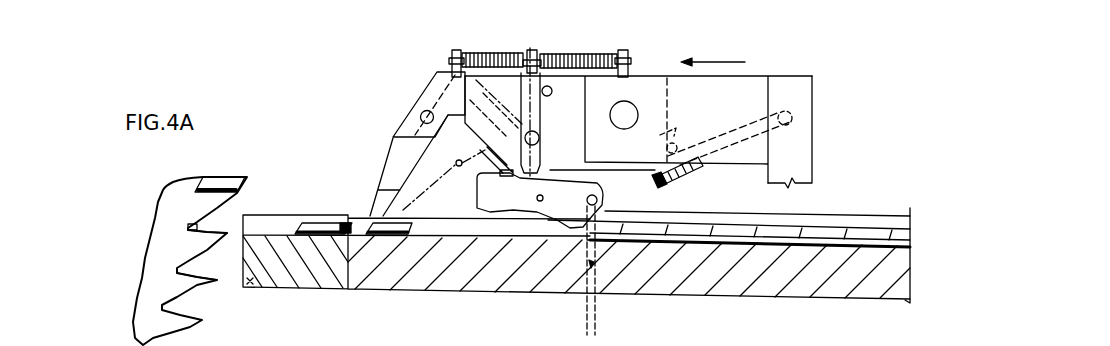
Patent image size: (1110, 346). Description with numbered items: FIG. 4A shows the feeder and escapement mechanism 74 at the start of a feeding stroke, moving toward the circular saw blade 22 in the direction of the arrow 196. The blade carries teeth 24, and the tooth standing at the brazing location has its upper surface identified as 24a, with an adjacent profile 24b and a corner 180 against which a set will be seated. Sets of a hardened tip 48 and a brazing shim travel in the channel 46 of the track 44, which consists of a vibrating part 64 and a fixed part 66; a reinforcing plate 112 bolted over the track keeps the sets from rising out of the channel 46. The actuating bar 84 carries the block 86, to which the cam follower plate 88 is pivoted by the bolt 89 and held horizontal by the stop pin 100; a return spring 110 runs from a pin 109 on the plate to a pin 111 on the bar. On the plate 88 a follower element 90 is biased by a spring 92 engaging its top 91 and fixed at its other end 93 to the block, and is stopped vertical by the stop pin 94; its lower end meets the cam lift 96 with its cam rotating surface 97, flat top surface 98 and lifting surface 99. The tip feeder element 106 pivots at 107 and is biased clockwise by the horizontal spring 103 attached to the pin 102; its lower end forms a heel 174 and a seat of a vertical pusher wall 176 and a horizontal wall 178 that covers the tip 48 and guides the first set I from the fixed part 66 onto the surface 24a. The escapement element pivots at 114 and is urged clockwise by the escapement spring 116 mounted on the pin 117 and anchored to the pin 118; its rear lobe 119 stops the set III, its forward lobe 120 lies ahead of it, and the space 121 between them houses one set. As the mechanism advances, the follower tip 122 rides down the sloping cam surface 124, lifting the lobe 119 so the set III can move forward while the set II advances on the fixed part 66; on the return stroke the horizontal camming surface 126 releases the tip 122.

The circular saw blade 22 is at (152, 227).
The teeth 24 is at (239, 194).
The tooth surface in brazing location 24a is at (205, 246).
The third tooth 24b is at (192, 294).
The track 44 is at (872, 286).
The channel 46 is at (897, 232).
The tip 48 is at (230, 178).
The vibrating part of track 64 is at (841, 290).
The fixed part of track 66 is at (243, 289).
The feeder and escapement mechanism 74 is at (663, 67).
The actuating bar 84 is at (805, 88).
The block 86 is at (757, 92).
The cam follower plate 88 is at (667, 148).
The bolt 89 is at (621, 104).
The follower element 90 is at (541, 114).
The top of follower element 91 is at (530, 50).
The spring 92 is at (567, 53).
The other end of spring 93 is at (615, 50).
The stop pin 94 is at (551, 96).
The cam lift 96 is at (413, 205).
The cam rotating surface 97 is at (540, 200).
The flat top surface 98 is at (464, 168).
The lifting surface 99 is at (423, 184).
The stop pin 100 is at (683, 140).
The pin 102 is at (456, 48).
The horizontal spring 103 is at (484, 52).
The tip feeder element 106 is at (402, 138).
The pin 107 is at (428, 108).
The pin 109 is at (664, 186).
The return spring 110 is at (690, 178).
The pin 111 is at (793, 115).
The reinforcing plate 112 is at (846, 213).
The escapement pivot 114 is at (562, 200).
The escapement spring 116 is at (598, 276).
The pin 117 is at (607, 190).
The pin 118 is at (580, 345).
The rear lobe 119 is at (533, 240).
The forward lobe 120 is at (452, 270).
The space between lobes 121 is at (518, 200).
The follower tip 122 is at (395, 143).
The cam surface 124 is at (496, 150).
The camming surface 126 is at (585, 173).
The heel 174 is at (353, 238).
The vertical wall 176 is at (340, 238).
The horizontal wall 178 is at (345, 219).
The corner of tooth 180 is at (190, 226).
The feeding direction arrow 196 is at (712, 61).
The first set I is at (314, 218).
The second set II is at (372, 214).
The third set III is at (603, 292).